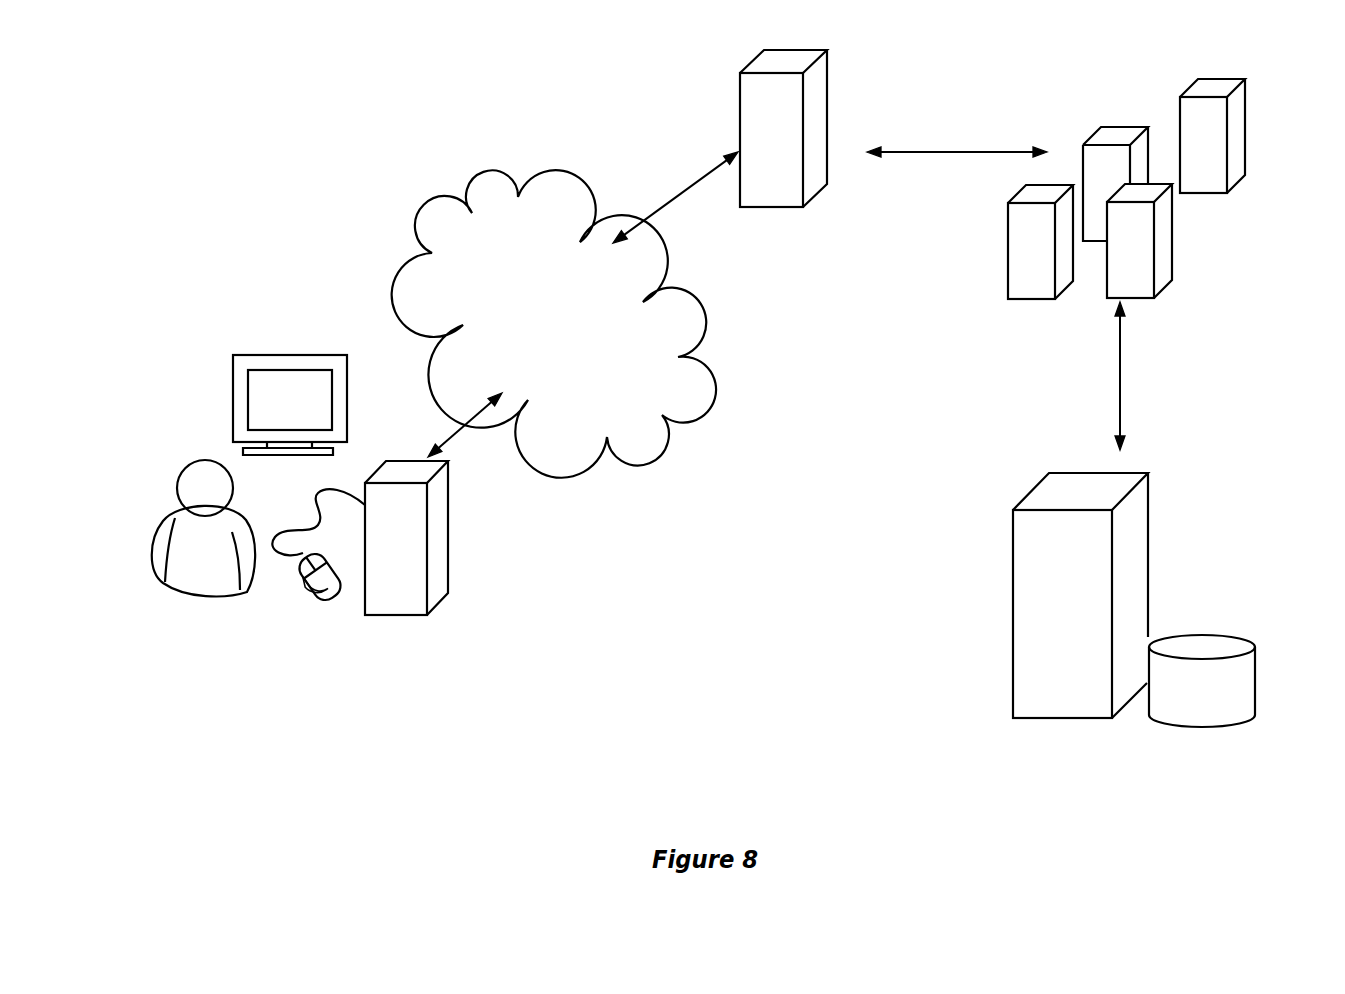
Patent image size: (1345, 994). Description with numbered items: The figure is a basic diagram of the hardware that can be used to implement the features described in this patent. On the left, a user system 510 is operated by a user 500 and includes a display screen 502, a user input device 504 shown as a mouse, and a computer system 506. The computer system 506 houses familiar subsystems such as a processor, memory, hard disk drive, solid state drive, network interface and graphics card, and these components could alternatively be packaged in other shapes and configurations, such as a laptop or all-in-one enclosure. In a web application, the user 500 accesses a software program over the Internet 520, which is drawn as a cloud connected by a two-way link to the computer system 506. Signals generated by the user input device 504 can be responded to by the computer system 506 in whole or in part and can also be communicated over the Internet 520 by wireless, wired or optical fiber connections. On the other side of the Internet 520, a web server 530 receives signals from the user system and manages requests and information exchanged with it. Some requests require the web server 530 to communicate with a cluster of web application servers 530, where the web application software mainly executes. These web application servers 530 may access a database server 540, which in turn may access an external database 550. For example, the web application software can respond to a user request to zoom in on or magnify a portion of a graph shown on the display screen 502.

The user 500 is at (181, 565).
The display screen 502 is at (271, 410).
The user input device 504 is at (317, 552).
The computer system 506 is at (378, 537).
The user system 510 is at (191, 381).
The Internet 520 is at (553, 382).
The web server 530 is at (753, 135).
The database server 540 is at (1051, 580).
The external database 550 is at (1178, 699).